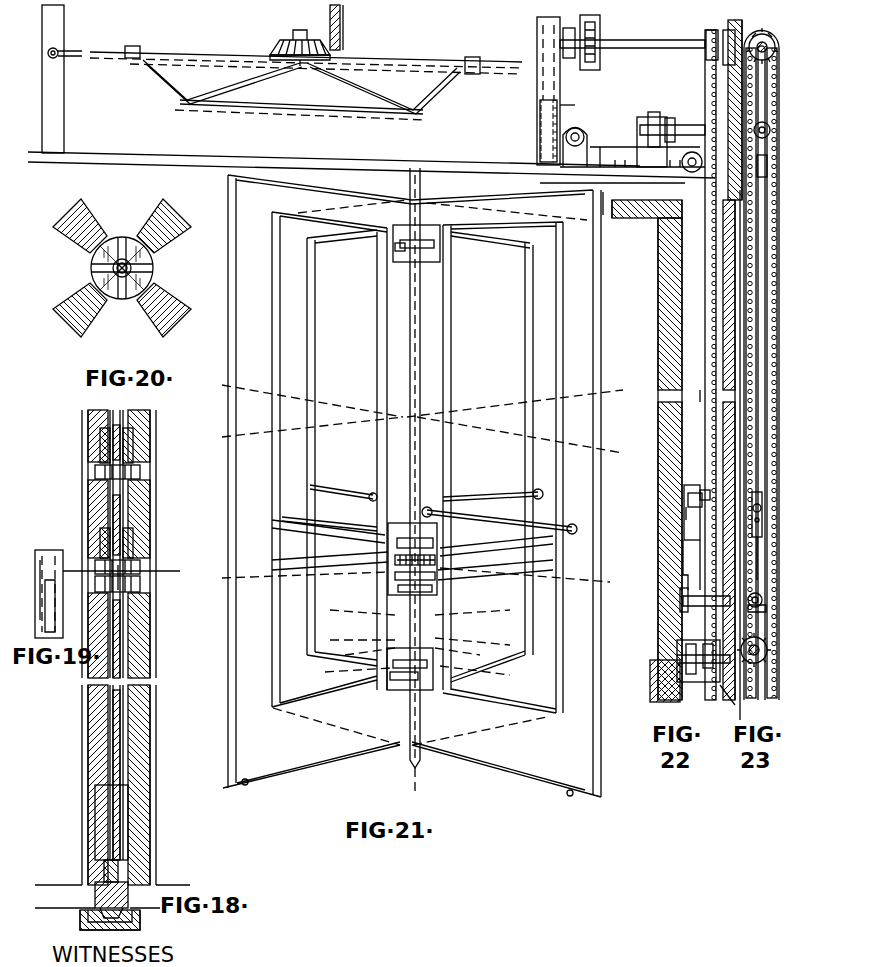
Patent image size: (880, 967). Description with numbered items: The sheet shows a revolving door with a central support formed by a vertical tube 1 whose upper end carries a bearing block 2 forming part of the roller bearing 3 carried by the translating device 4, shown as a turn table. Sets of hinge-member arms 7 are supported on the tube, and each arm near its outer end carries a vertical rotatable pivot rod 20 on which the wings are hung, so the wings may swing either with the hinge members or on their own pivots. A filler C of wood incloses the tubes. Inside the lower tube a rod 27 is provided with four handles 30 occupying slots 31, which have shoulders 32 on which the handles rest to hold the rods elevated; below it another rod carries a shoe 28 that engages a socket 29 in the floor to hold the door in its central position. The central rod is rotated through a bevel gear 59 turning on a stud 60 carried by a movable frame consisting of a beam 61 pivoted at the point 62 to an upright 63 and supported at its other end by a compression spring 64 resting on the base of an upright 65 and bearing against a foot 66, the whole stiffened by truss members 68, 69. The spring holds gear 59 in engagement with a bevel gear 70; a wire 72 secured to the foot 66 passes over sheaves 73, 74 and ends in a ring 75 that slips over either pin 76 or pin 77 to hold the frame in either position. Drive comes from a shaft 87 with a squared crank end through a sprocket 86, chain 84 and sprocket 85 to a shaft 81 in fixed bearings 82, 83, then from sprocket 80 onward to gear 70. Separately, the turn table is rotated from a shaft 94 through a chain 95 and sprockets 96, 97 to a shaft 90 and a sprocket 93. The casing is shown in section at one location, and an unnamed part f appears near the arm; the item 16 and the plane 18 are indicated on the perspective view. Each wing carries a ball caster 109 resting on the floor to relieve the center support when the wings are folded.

In FIG. 21, the vertical tube 1 is at (422, 188).
In FIG. 19, the vertical tube 1 is at (215, 432).
In FIG. 21, the bearing block 2 is at (401, 278).
In FIG. 21, the roller bearing 3 is at (415, 670).
In FIG. 21, the translating device 4 is at (416, 585).
In FIG. 21, the arms 7 is at (432, 238).
In FIG. 22, the arms 7 is at (612, 592).
In FIG. 19, the arms 7 is at (214, 574).
In FIG. 21, the gear 16 is at (399, 590).
In FIG. 21, the section line 18 is at (401, 785).
In FIG. 19, the pivot rod 20 is at (121, 558).
In FIG. 20, the rod 27 is at (100, 268).
In FIG. 19, the rod 27 is at (112, 435).
In FIG. 18, the shoe 28 is at (130, 898).
In FIG. 18, the socket 29 is at (132, 928).
In FIG. 20, the handles 30 is at (135, 270).
In FIG. 19, the handles 30 is at (140, 472).
In FIG. 20, the slots 31 is at (135, 278).
In FIG. 19, the slots 31 is at (140, 445).
In FIG. 19, the shoulders 32 is at (52, 600).
In FIG. 21, the bevel gear 59 is at (275, 42).
In FIG. 21, the stud 60 is at (300, 28).
In FIG. 21, the beam 61 is at (393, 60).
In FIG. 21, the pivot point 62 is at (58, 47).
In FIG. 21, the upright 63 is at (60, 100).
In FIG. 22, the compression spring 64 is at (538, 128).
In FIG. 22, the upright 65 is at (537, 100).
In FIG. 22, the foot 66 is at (560, 110).
In FIG. 21, the truss member 68 is at (262, 76).
In FIG. 21, the truss member 69 is at (235, 105).
In FIG. 21, the bevel gear 70 is at (342, 28).
In FIG. 22, the wire 72 is at (610, 120).
In FIG. 23, the wire 72 is at (762, 330).
In FIG. 22, the sheave 73 is at (578, 130).
In FIG. 22, the sheave 74 is at (690, 152).
In FIG. 23, the sheave 74 is at (767, 165).
In FIG. 22, the ring 75 is at (688, 512).
In FIG. 23, the ring 75 is at (762, 512).
In FIG. 22, the pin 76 is at (716, 488).
In FIG. 22, the pin 77 is at (702, 561).
In FIG. 22, the sprocket 80 is at (598, 22).
In FIG. 22, the shaft 81 is at (630, 42).
In FIG. 22, the bearing 82 is at (537, 22).
In FIG. 22, the bearing 83 is at (723, 30).
In FIG. 22, the chain 84 is at (705, 68).
In FIG. 23, the chain 84 is at (766, 635).
In FIG. 22, the sprocket 85 is at (704, 36).
In FIG. 22, the sprocket 86 is at (688, 660).
In FIG. 23, the sprocket 86 is at (766, 660).
In FIG. 22, the shaft 87 is at (708, 685).
In FIG. 22, the shaft 90 is at (672, 108).
In FIG. 22, the sprocket 93 is at (652, 116).
In FIG. 22, the shaft 94 is at (688, 610).
In FIG. 23, the shaft 94 is at (766, 612).
In FIG. 23, the chain 95 is at (763, 570).
In FIG. 23, the sprocket 96 is at (770, 130).
In FIG. 23, the sprocket 97 is at (762, 600).
In FIG. 21, the ball caster 109 is at (407, 802).
In FIG. 21, the filler C is at (430, 450).
In FIG. 19, the filler C is at (148, 643).
In FIG. 21, the link f is at (312, 66).